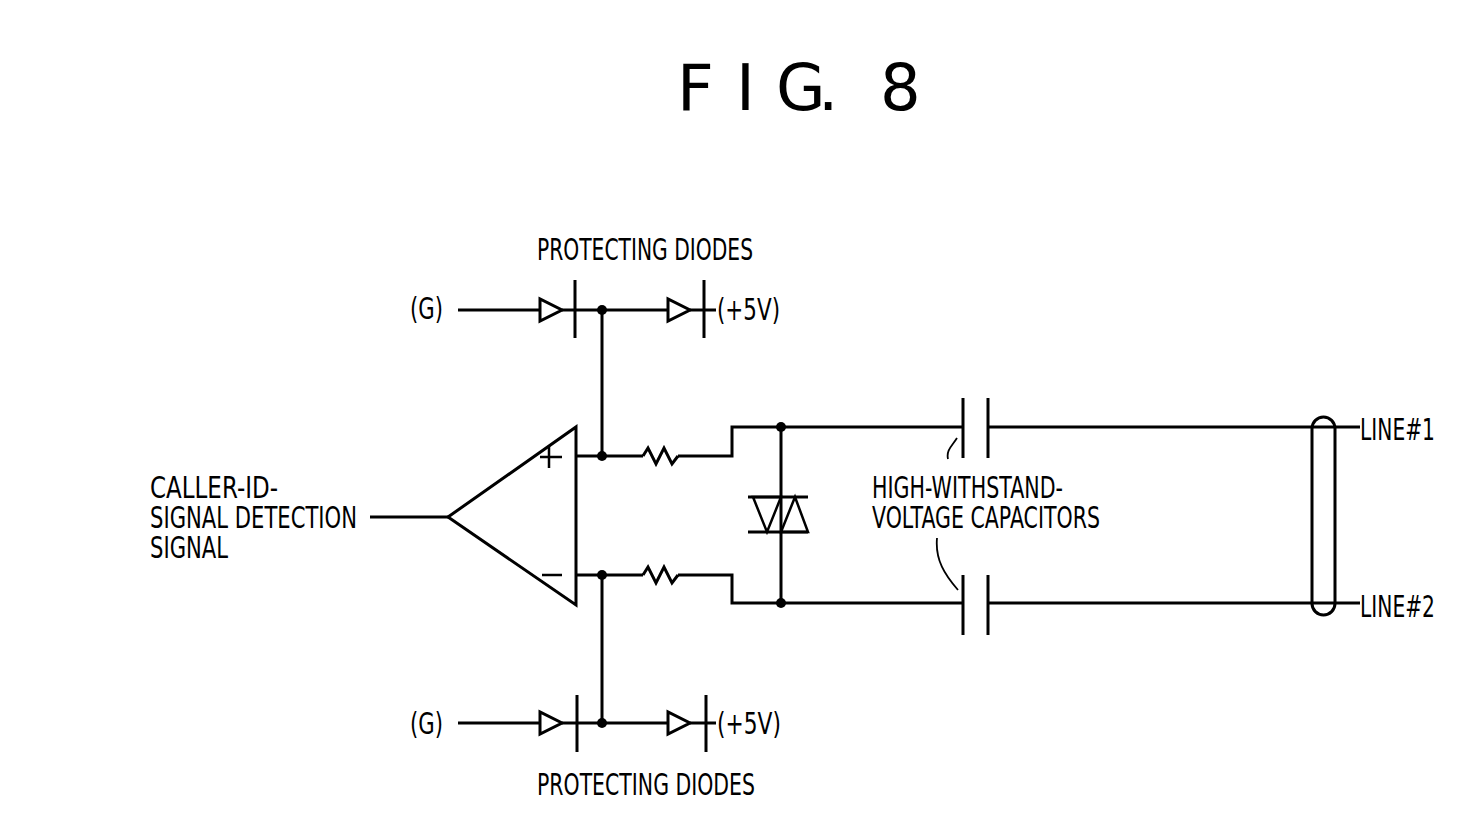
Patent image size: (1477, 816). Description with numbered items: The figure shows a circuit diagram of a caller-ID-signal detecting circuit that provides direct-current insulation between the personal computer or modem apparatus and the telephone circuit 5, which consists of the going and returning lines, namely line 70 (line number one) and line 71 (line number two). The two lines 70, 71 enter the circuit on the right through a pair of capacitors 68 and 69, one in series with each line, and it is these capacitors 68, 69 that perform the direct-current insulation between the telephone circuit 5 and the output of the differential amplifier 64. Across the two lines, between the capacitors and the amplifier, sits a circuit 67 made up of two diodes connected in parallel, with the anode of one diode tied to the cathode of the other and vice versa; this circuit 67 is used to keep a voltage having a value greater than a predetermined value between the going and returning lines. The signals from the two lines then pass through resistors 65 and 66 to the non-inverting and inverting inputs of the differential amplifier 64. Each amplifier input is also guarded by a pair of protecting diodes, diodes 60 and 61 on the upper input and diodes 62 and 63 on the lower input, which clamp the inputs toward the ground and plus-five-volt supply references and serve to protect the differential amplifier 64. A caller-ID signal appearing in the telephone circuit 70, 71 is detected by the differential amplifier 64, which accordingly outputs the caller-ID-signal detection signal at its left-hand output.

The telephone circuit 5 is at (1330, 417).
The protecting diode 60 is at (548, 319).
The protecting diode 61 is at (676, 319).
The protecting diode 62 is at (553, 710).
The protecting diode 63 is at (684, 710).
The differential amplifier 64 is at (507, 567).
The resistor 65 is at (653, 446).
The resistor 66 is at (653, 567).
The circuit including two diodes 67 is at (812, 516).
The capacitor 68 is at (995, 415).
The capacitor 69 is at (995, 616).
The telephone circuit line #1 70 is at (1247, 427).
The telephone circuit line #2 71 is at (1247, 603).